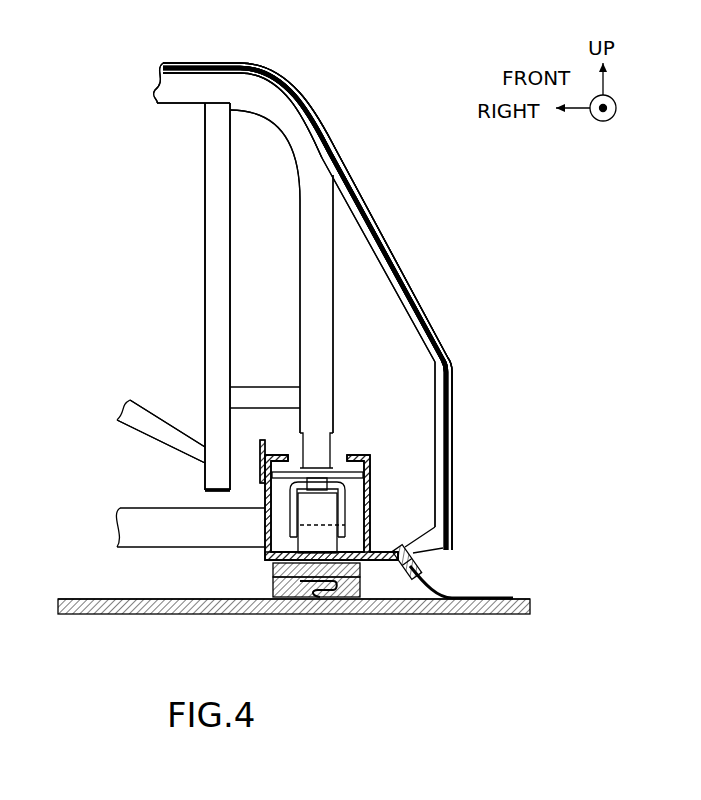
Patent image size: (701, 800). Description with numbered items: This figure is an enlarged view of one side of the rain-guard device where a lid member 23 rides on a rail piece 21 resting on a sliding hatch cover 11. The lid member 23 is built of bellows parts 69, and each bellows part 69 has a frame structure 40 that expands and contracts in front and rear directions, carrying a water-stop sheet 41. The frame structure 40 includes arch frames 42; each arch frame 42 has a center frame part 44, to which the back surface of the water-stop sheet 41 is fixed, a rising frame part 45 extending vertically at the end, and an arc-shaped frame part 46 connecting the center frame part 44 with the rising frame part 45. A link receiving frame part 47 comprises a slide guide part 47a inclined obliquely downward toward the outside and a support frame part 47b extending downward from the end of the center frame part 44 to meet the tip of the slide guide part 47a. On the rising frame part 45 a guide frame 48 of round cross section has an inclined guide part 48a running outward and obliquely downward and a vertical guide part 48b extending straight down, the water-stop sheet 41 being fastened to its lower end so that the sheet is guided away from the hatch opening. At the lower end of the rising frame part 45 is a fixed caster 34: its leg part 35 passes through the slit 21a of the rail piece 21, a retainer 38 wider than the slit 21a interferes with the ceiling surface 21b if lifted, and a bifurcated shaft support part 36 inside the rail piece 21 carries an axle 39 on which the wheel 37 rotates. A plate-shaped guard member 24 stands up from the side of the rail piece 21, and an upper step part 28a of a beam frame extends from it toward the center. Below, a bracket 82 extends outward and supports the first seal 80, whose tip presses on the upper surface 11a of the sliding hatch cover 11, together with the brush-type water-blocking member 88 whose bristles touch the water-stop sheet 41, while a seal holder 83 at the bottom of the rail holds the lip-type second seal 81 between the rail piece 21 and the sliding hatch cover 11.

The lid member 23 is at (292, 46).
The bellows part 69 is at (320, 92).
The water-stop sheet 41 is at (347, 159).
The frame structure 40 is at (142, 129).
The arch frame 42 is at (131, 85).
The center frame part 44 is at (185, 110).
The support frame part 47b is at (203, 238).
The slide guide part 47a is at (142, 434).
The link receiving frame part 47 is at (170, 457).
The rising frame part 45 is at (300, 280).
The arc-shaped frame part 46 is at (290, 146).
The leg part 35 is at (318, 443).
The guide frame 48 is at (357, 243).
The inclined guide part 48a is at (388, 284).
The vertical guide part 48b is at (435, 392).
The guard member 24 is at (254, 440).
The retainer 38 is at (292, 458).
The rail piece 21 is at (374, 500).
The slit 21a is at (341, 451).
The ceiling surface 21b is at (360, 466).
The axle 39 is at (266, 554).
The wheel 37 is at (264, 503).
The shaft support part 36 is at (288, 518).
The fixed caster 34 is at (350, 533).
The upper step part 28a is at (143, 544).
The seal holder 83 is at (273, 582).
The bracket 82 is at (385, 567).
The second seal 81 is at (316, 600).
The sliding hatch cover 11 is at (112, 621).
The upper surface 11a is at (520, 598).
The first seal 80 is at (447, 589).
The water-blocking member 88 is at (431, 549).